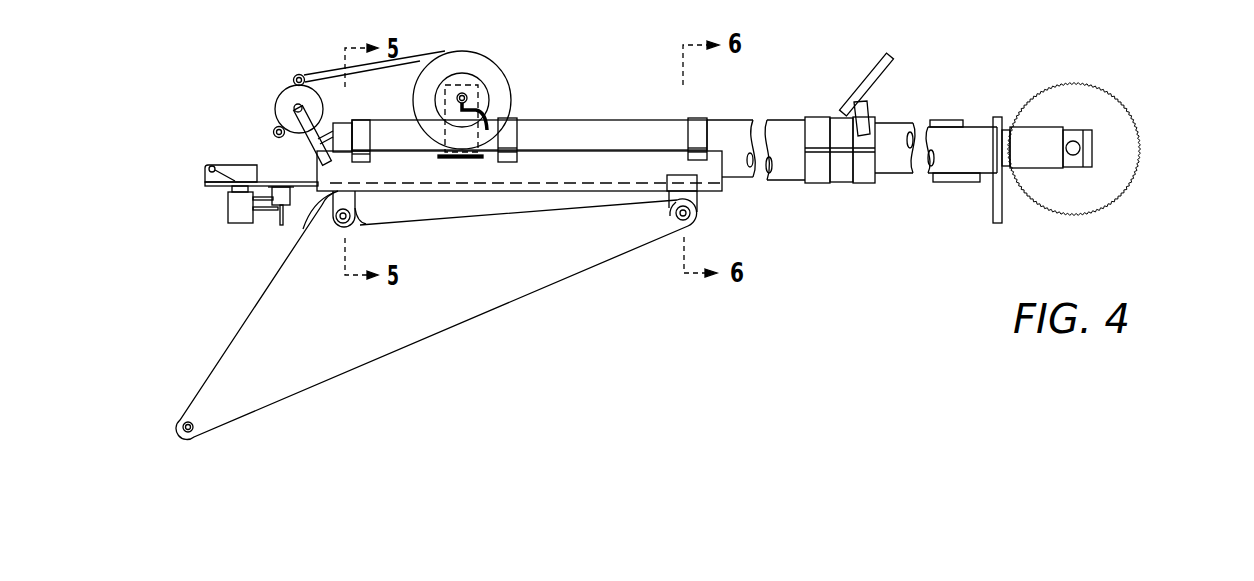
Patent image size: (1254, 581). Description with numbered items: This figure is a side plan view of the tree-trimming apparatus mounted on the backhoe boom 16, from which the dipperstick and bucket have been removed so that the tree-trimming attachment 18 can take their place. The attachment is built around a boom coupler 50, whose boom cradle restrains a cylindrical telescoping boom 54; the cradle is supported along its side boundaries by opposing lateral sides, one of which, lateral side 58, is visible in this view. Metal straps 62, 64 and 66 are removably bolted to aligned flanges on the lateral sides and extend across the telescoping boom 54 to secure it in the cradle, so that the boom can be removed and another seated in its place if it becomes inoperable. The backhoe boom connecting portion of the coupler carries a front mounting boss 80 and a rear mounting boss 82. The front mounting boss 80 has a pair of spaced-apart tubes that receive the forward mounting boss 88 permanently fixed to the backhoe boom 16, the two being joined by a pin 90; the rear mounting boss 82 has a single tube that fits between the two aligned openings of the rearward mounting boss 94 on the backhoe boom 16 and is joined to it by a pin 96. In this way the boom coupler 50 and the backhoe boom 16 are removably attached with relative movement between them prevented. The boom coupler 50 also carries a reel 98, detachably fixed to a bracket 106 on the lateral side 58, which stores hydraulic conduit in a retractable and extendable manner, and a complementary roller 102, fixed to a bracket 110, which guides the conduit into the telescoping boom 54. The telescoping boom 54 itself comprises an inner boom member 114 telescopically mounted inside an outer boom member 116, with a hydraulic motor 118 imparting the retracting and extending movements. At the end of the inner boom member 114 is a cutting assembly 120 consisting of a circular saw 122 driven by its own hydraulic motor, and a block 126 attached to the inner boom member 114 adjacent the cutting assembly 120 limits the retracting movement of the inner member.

The backhoe boom 16 is at (333, 373).
The tree-trimming attachment 18 is at (560, 52).
The boom coupler 50 is at (557, 190).
The telescoping boom 54 is at (863, 208).
The lateral side 58 is at (598, 163).
The metal strap 62 is at (690, 137).
The metal strap 64 is at (517, 135).
The metal strap 66 is at (365, 138).
The front mounting boss 80 is at (700, 197).
The rear mounting boss 82 is at (303, 230).
The forward mounting boss 88 is at (693, 217).
The pin 90 is at (673, 210).
The rearward mounting boss 94 is at (357, 222).
The pin 96 is at (341, 225).
The reel 98 is at (492, 70).
The roller 102 is at (283, 103).
The bracket 106 is at (465, 158).
The bracket 110 is at (310, 150).
The inner boom member 114 is at (902, 128).
The outer boom member 116 is at (785, 130).
The hydraulic motor 118 is at (232, 210).
The cutting assembly 120 is at (1140, 88).
The circular saw 122 is at (1125, 163).
The block 126 is at (957, 182).